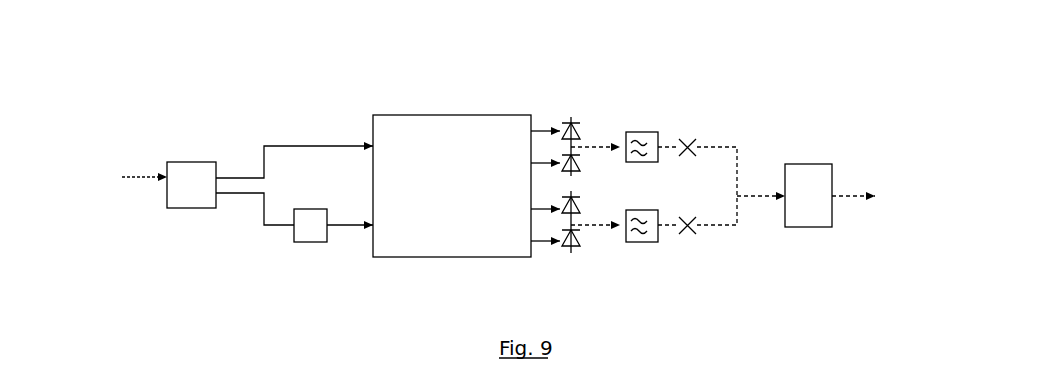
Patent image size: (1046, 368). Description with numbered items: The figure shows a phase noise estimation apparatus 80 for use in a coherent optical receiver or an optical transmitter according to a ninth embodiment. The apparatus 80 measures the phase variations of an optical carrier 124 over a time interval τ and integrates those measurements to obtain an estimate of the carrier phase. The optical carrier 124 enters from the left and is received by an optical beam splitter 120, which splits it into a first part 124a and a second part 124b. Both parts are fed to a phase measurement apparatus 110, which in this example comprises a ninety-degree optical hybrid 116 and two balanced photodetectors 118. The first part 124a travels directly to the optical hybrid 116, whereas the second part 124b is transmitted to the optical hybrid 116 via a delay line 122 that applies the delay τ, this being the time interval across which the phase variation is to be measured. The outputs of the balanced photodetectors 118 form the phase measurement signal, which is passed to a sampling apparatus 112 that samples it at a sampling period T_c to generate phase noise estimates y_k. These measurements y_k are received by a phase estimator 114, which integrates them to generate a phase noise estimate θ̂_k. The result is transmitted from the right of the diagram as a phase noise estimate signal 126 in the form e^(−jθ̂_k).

The phase noise estimation apparatus 80 is at (603, 62).
The phase measurement apparatus 110 is at (396, 92).
The sampling apparatus 112 is at (657, 257).
The phase estimator 114 is at (807, 221).
The 90° optical hybrid 116 is at (414, 248).
The balanced photodetectors 118 is at (576, 131).
The optical beam splitter 120 is at (190, 205).
The delay line 122 is at (320, 241).
The optical carrier 124 is at (131, 181).
The first part of the optical carrier 124a is at (285, 140).
The second part of the optical carrier 124b is at (270, 229).
The phase noise estimate signal 126 is at (858, 199).